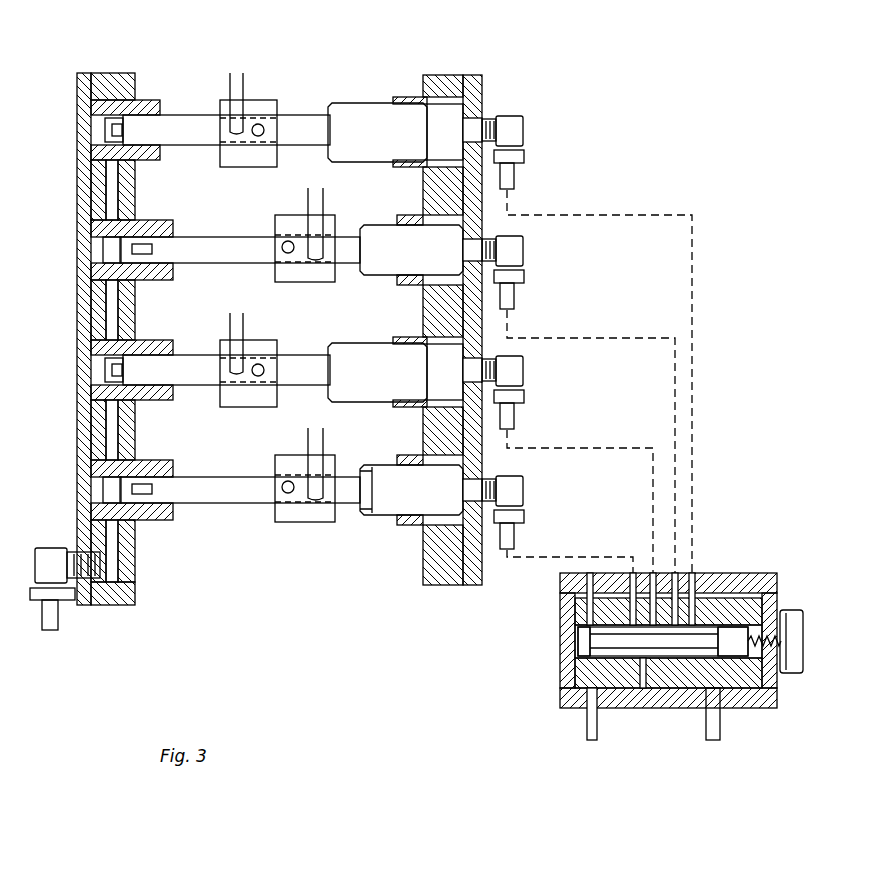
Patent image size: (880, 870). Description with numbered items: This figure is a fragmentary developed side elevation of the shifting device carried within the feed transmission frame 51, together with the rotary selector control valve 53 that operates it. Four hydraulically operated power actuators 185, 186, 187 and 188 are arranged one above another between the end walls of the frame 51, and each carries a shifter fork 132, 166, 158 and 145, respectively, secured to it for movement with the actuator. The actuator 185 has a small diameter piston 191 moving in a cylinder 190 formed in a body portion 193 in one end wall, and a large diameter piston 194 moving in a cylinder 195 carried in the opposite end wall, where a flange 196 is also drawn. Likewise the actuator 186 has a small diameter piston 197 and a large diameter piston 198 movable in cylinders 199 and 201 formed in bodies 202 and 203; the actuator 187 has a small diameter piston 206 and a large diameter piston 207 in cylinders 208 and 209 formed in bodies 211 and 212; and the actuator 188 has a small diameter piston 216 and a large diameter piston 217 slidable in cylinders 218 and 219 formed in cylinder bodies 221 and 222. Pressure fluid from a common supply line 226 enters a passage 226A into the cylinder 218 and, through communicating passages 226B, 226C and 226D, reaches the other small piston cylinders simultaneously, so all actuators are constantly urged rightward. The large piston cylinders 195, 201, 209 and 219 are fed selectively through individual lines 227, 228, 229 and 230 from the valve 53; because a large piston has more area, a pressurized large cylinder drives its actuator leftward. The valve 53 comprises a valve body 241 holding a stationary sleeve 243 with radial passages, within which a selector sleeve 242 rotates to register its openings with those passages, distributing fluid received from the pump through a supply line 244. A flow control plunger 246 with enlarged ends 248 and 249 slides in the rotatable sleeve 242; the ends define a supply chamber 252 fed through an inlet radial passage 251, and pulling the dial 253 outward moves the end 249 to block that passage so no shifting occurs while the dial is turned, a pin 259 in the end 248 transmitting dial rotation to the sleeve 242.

The transmission frame 51 is at (80, 330).
The selector control valve 53 is at (657, 662).
The shifter fork 132 is at (237, 72).
The shifter fork 145 is at (310, 443).
The shifter fork 158 is at (238, 313).
The shifter fork 166 is at (312, 212).
The power actuator 185 is at (391, 296).
The power actuator 186 is at (350, 361).
The power actuator 187 is at (372, 423).
The power actuator 188 is at (329, 490).
The cylinder 190 is at (175, 118).
The small diameter piston 191 is at (140, 116).
The body portion 193 is at (150, 160).
The large diameter piston 194 is at (355, 120).
The cylinder 195 is at (466, 112).
The flange 196 is at (407, 97).
The small diameter piston 197 is at (185, 240).
The large diameter piston 198 is at (380, 225).
The cylinder 199 is at (100, 268).
The cylinder 201 is at (470, 240).
The body 202 is at (200, 208).
The body 203 is at (395, 338).
The small diameter piston 206 is at (148, 393).
The large diameter piston 207 is at (355, 350).
The cylinder 208 is at (175, 330).
The cylinder 209 is at (472, 362).
The body 211 is at (148, 357).
The body 212 is at (420, 404).
The small diameter piston 216 is at (187, 488).
The large diameter piston 217 is at (378, 498).
The cylinder 218 is at (128, 496).
The cylinder 219 is at (390, 507).
The cylinder body 221 is at (160, 470).
The cylinder body 222 is at (413, 457).
The common supply line 226 is at (50, 635).
The passage 226A is at (112, 562).
The communicating passage 226B is at (112, 433).
The communicating passage 226C is at (112, 301).
The communicating passage 226D is at (112, 186).
The line 227 is at (512, 185).
The line 228 is at (512, 300).
The line 229 is at (512, 420).
The line 230 is at (512, 535).
The valve body 241 is at (763, 590).
The selector sleeve 242 is at (565, 668).
The stationary sleeve 243 is at (720, 573).
The supply line 244 is at (585, 728).
The flow control plunger 246 is at (627, 700).
The large diameter end portion 248 is at (762, 637).
The large diameter end portion 249 is at (590, 642).
The pressure fluid inlet radial passage 251 is at (575, 618).
The valve supply chamber 252 is at (650, 700).
The dial 253 is at (795, 645).
The pin 259 is at (760, 655).